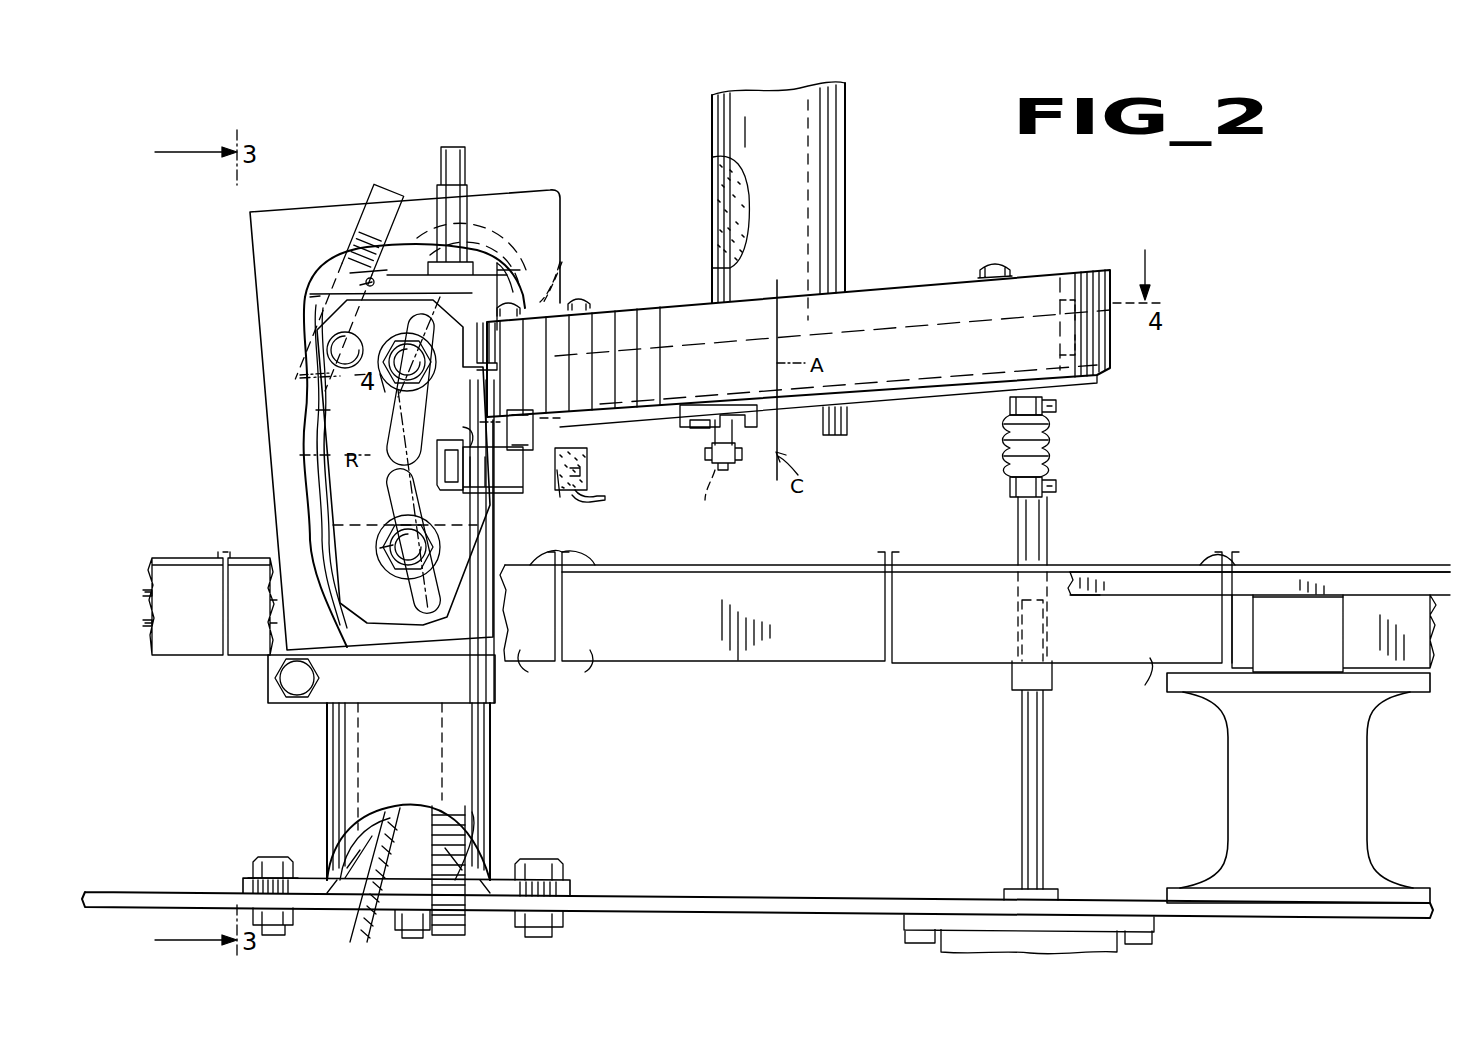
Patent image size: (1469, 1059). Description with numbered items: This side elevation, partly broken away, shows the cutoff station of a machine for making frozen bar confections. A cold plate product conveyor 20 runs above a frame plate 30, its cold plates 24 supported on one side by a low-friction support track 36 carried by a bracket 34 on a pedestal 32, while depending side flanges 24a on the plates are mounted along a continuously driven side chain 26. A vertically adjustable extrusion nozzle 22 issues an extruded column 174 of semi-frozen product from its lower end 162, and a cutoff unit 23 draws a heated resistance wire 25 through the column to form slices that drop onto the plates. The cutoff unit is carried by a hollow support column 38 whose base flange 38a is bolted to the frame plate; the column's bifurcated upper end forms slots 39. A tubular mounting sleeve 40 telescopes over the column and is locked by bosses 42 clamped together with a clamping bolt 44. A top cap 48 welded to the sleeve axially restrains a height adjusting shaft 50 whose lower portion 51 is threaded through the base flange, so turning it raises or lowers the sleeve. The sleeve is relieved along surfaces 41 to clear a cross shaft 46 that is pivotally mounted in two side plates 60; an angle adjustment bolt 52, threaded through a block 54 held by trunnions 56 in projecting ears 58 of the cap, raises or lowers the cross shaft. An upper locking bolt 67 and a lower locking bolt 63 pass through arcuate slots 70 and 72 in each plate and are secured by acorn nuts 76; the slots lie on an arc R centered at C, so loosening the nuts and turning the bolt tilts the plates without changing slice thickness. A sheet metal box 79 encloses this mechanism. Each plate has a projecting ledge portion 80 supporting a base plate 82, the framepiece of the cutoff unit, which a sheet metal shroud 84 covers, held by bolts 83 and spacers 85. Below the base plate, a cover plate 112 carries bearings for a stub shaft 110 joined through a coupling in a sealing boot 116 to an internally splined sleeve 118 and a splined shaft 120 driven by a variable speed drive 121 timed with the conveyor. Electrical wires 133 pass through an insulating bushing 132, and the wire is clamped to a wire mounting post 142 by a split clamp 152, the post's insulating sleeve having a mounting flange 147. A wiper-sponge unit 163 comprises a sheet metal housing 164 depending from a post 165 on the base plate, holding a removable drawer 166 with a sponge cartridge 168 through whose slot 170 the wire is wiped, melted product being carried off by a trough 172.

The cold plate product conveyor 20 is at (1327, 557).
The extrusion nozzle 22 is at (845, 125).
The cutoff unit 23 is at (1040, 245).
The cold plates 24 is at (711, 543).
The depending side flanges 24a is at (160, 646).
The heated resistance wire 25 is at (707, 500).
The side chain 26 is at (143, 593).
The frame plate 30 is at (762, 896).
The pedestal 32 is at (1298, 788).
The bracket 34 is at (1298, 617).
The support track 36 is at (1088, 597).
The hollow support column 38 is at (327, 748).
The base flange 38a is at (570, 880).
The slots 39 is at (392, 690).
The tubular mounting sleeve 40 is at (322, 507).
The relieved surfaces 41 is at (299, 378).
The bosses 42 is at (268, 673).
The clamping bolt 44 is at (290, 686).
The cross shaft 46 is at (335, 353).
The top cap 48 is at (505, 265).
The height adjusting shaft 50 is at (467, 185).
The lower portion 51 is at (435, 815).
The angle adjustment bolt 52 is at (362, 252).
The block 54 is at (350, 273).
The trunnions 56 is at (360, 285).
The projecting ears 58 is at (310, 297).
The side plates 60 is at (316, 410).
The lower locking bolt 63 is at (390, 565).
The locking bolt 67 is at (404, 333).
The arcuate slot 70 is at (388, 430).
The arcuate slot 72 is at (388, 482).
The acorn nut 76 is at (380, 402).
The sheet metal box 79 is at (286, 213).
The projecting ledge portion 80 is at (542, 425).
The base plate 82 is at (480, 400).
The bolts 83 is at (578, 312).
The sheet metal shroud 84 is at (868, 296).
The spacers 85 is at (485, 372).
The stub shaft 110 is at (1010, 398).
The cover plate 112 is at (1097, 383).
The sealing boot 116 is at (1058, 436).
The internally splined sleeve 118 is at (1042, 502).
The splined shaft 120 is at (1022, 778).
The variable speed drive 121 is at (904, 944).
The electrical insulating bushing 132 is at (563, 278).
The electrical wires 133 is at (350, 942).
The wire mounting post 142 is at (712, 436).
The mounting flange 147 is at (680, 418).
The split clamp 152 is at (705, 453).
The lower end 162 is at (833, 435).
The wiper-sponge unit 163 is at (517, 494).
The sheet metal housing 164 is at (463, 427).
The post 165 is at (540, 440).
The removable drawer 166 is at (562, 494).
The sponge cartridge 168 is at (590, 462).
The slot 170 is at (590, 480).
The trough 172 is at (607, 498).
The extruded column 174 is at (718, 183).